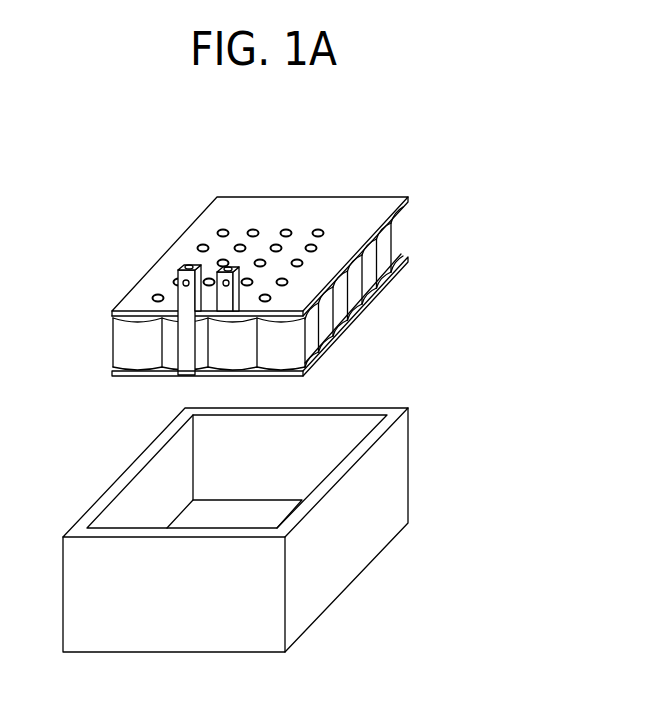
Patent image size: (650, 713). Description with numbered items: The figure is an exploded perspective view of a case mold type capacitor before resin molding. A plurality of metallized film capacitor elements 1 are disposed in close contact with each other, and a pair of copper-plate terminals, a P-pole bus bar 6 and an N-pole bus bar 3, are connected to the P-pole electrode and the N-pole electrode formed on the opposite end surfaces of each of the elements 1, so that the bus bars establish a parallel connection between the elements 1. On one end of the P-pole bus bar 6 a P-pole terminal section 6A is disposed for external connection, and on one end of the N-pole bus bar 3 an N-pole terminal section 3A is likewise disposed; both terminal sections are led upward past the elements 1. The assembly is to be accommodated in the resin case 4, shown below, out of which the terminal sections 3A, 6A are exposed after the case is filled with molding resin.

The metallized film capacitor element 1 is at (127, 338).
The N-pole bus bar 3 is at (400, 261).
The N-pole terminal section 3A is at (187, 298).
The case 4 is at (397, 468).
The P-pole bus bar 6 is at (347, 208).
The P-pole terminal section 6A is at (221, 266).